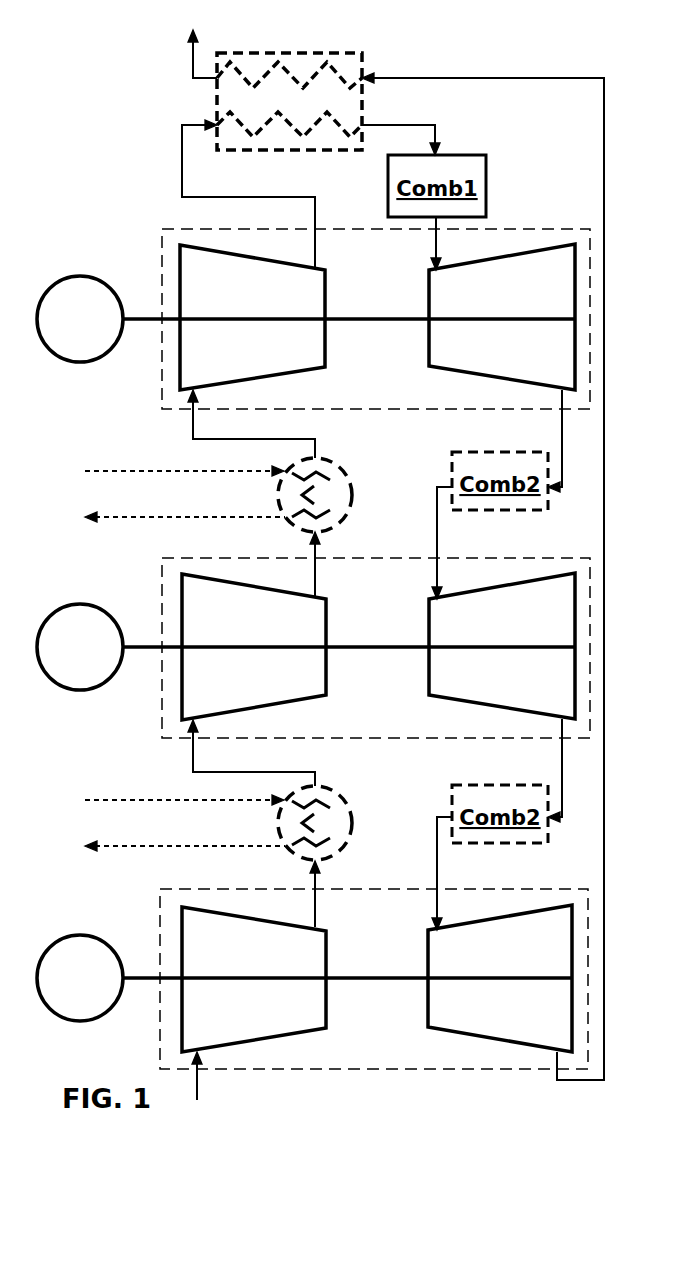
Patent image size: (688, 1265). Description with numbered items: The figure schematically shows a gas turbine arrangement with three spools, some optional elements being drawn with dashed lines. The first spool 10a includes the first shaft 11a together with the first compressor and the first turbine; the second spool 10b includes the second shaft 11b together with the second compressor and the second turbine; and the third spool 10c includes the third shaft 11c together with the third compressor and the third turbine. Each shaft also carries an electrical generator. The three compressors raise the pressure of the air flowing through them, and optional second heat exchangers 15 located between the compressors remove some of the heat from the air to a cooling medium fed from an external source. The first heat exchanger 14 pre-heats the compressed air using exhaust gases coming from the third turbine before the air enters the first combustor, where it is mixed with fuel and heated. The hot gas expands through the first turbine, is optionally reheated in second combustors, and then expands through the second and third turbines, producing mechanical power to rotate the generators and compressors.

The first spool 10a is at (313, 319).
The second spool 10b is at (313, 648).
The third spool 10c is at (312, 979).
The first shaft 11a is at (347, 317).
The second shaft 11b is at (347, 645).
The third shaft 11c is at (347, 976).
The first heat exchanger 14 is at (362, 53).
The second heat exchangers 15 is at (355, 492).